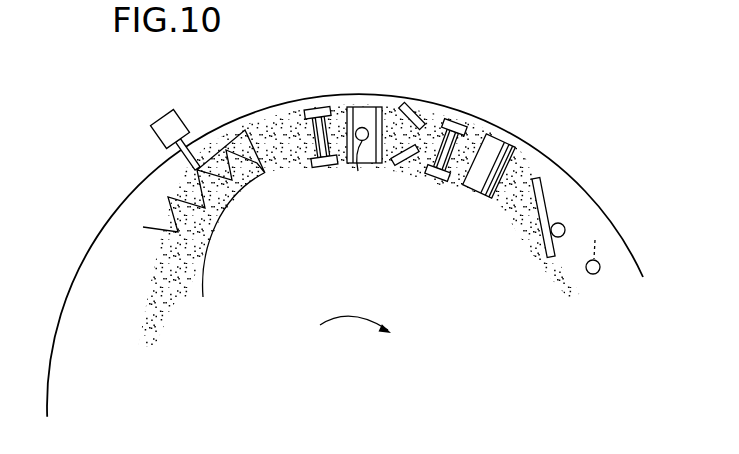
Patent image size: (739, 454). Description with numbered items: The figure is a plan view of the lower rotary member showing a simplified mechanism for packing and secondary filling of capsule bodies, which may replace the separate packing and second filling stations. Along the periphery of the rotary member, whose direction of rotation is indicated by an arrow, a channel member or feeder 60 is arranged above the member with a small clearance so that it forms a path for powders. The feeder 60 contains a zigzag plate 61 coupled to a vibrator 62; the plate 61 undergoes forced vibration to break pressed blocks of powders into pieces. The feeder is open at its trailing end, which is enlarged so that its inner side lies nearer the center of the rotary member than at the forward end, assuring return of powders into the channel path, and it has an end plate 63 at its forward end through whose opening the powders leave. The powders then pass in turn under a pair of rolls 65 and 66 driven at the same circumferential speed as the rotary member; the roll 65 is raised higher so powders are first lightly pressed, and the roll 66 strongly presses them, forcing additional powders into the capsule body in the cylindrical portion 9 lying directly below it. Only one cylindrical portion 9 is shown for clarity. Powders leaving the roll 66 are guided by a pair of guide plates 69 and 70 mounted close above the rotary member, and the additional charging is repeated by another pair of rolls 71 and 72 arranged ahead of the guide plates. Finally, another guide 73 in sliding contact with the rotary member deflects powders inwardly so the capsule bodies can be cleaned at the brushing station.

The cylindrical portion 9 is at (565, 228).
The channel member or feeder 60 is at (208, 252).
The zigzag plate 61 is at (263, 173).
The vibrator 62 is at (167, 110).
The end plate 63 is at (264, 172).
The roll 65 is at (305, 108).
The roll 66 is at (363, 107).
The guide plate 69 is at (410, 109).
The guide plate 70 is at (405, 166).
The roll 71 is at (462, 117).
The roll 72 is at (508, 137).
The guide 73 is at (537, 177).